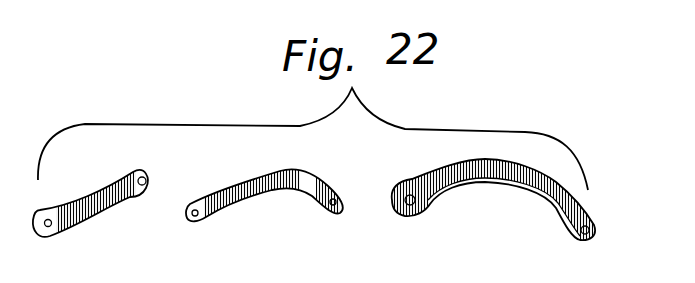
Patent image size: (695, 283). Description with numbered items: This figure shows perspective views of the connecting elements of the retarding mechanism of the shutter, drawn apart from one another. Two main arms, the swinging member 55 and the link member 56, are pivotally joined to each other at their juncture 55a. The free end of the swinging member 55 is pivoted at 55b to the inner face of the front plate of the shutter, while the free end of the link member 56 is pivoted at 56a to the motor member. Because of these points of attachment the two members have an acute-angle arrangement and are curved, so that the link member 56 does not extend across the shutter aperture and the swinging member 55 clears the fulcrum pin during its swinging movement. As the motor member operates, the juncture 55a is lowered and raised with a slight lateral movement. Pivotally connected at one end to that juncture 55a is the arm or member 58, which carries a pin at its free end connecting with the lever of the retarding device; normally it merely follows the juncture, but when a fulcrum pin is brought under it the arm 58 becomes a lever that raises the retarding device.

The swinging member 55 is at (90, 202).
The pivotal juncture 55a is at (44, 234).
The pivot of member 55 55b is at (146, 191).
The arm or member 58 is at (264, 200).
The link member 56 is at (490, 181).
The pivot of member 56 56a is at (584, 238).